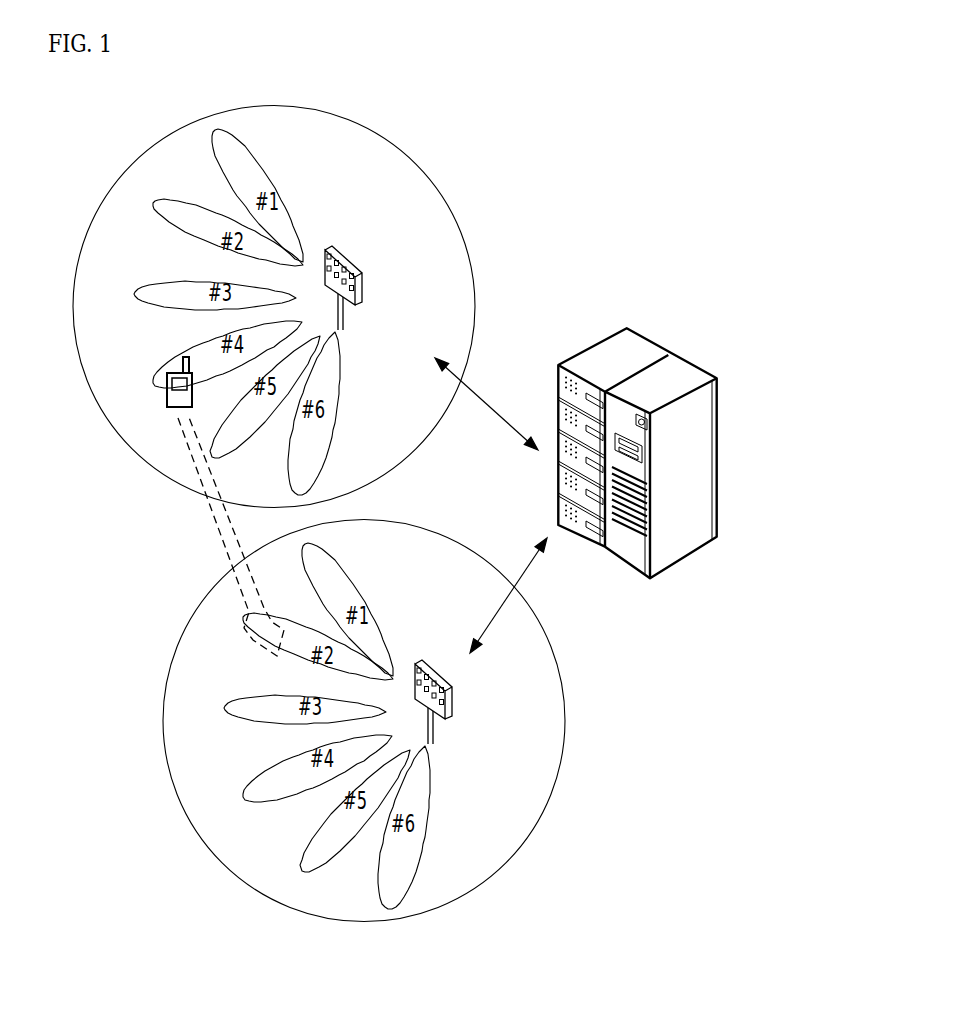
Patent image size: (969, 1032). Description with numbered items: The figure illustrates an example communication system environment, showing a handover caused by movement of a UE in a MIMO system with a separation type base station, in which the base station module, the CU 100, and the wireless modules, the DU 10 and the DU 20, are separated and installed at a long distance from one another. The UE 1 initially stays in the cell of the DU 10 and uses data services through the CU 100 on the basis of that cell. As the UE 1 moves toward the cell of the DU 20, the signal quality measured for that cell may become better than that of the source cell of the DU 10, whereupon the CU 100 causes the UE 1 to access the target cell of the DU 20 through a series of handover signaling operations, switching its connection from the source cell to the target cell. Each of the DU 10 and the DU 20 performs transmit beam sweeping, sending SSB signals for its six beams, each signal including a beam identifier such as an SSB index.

The UE 1 is at (167, 402).
The DU 10 is at (357, 290).
The DU 20 is at (477, 702).
The CU 100 is at (590, 346).